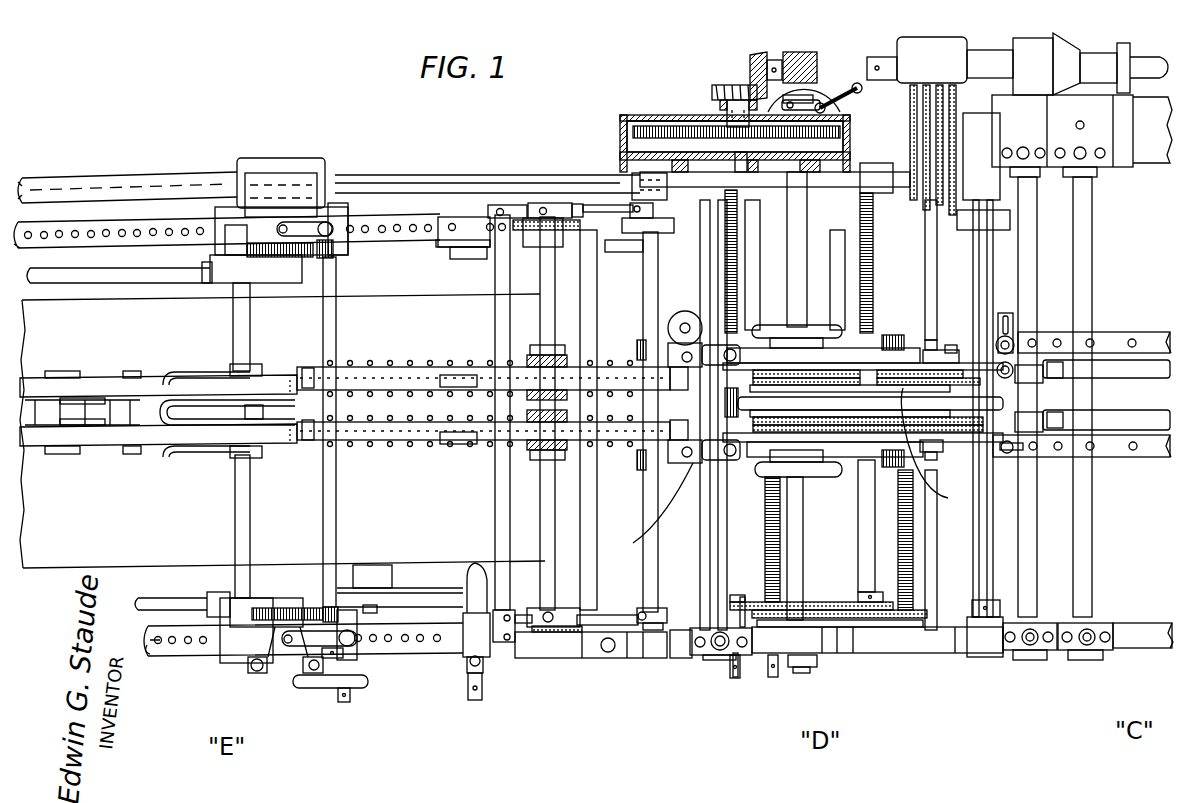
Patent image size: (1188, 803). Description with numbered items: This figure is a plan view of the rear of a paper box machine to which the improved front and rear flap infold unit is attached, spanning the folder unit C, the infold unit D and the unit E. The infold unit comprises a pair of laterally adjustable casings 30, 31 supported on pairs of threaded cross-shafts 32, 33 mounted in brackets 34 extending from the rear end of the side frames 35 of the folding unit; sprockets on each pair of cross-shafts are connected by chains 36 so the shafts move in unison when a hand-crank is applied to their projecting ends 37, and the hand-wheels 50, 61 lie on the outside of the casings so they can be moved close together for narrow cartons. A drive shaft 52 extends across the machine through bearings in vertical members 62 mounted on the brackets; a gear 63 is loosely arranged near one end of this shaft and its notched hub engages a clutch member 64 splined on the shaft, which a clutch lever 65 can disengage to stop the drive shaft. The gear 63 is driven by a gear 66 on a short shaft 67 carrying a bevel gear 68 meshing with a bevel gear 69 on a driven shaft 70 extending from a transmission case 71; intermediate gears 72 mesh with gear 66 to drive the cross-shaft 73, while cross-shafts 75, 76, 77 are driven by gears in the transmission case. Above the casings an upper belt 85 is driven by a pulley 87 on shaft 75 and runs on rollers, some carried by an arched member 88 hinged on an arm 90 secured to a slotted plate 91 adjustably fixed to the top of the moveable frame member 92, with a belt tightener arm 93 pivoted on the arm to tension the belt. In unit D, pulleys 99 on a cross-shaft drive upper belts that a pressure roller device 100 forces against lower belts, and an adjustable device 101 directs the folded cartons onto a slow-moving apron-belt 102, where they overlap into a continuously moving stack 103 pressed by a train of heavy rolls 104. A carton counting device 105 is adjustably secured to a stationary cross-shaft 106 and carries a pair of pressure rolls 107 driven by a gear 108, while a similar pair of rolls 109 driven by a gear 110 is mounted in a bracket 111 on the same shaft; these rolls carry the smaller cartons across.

The casing 30 is at (858, 476).
The casing 31 is at (853, 352).
The threaded cross-shaft 32 is at (713, 553).
The threaded cross-shaft 33 is at (788, 544).
The bracket 34 is at (848, 183).
The side frame 35 is at (1153, 169).
The chain 36 is at (833, 606).
The projecting end 37 is at (753, 675).
The hand-wheel 50 is at (798, 333).
The drive shaft 52 is at (809, 215).
The hand-wheel 61 is at (897, 339).
The vertical member 62 is at (621, 128).
The gear 63 is at (843, 133).
The clutch member 64 is at (813, 103).
The clutch lever 65 is at (851, 75).
The gear 66 is at (725, 115).
The short shaft 67 is at (744, 175).
The bevel gear 68 is at (723, 88).
The bevel gear 69 is at (760, 53).
The driven shaft 70 is at (871, 65).
The transmission case 71 is at (1065, 101).
The intermediate gear 72 is at (665, 118).
The cross-shaft 73 is at (643, 251).
The cross-shaft 75 is at (981, 243).
The cross-shaft 76 is at (1031, 218).
The cross-shaft 77 is at (1089, 214).
The belt 85 is at (936, 458).
The pulley 87 is at (1003, 409).
The arched member 88 is at (935, 446).
The arm 90 is at (966, 356).
The slotted plate 91 is at (1016, 319).
The moveable frame member 92 is at (1105, 340).
The belt tightener arm 93 is at (908, 383).
The pulley 99 is at (648, 391).
The pressure roller device 100 is at (321, 384).
The adjustable device 101 is at (463, 384).
The apron-belt 102 is at (173, 565).
The stack 103 is at (163, 384).
The heavy roll 104 is at (58, 384).
The carton counting device 105 is at (675, 323).
The stationary cross-shaft 106 is at (715, 209).
The pressure roll 107 is at (709, 373).
The gear 108 is at (645, 351).
The roll 109 is at (653, 483).
The gear 110 is at (645, 465).
The bracket 111 is at (652, 509).